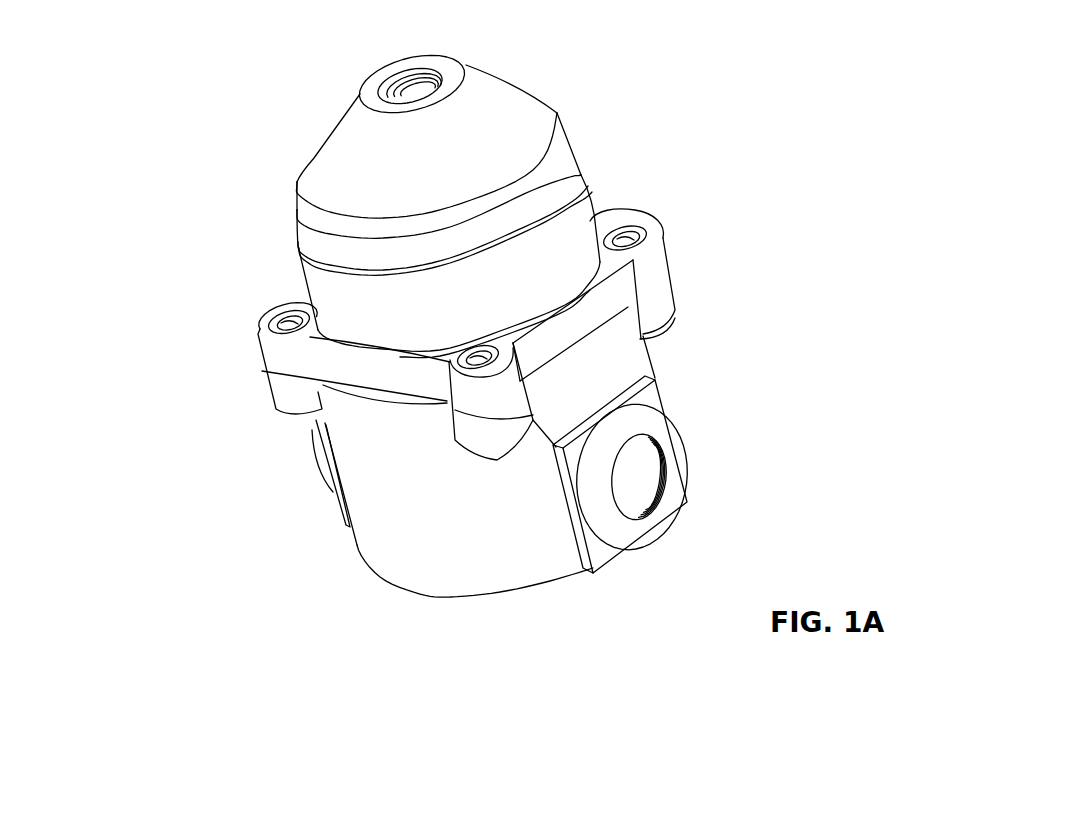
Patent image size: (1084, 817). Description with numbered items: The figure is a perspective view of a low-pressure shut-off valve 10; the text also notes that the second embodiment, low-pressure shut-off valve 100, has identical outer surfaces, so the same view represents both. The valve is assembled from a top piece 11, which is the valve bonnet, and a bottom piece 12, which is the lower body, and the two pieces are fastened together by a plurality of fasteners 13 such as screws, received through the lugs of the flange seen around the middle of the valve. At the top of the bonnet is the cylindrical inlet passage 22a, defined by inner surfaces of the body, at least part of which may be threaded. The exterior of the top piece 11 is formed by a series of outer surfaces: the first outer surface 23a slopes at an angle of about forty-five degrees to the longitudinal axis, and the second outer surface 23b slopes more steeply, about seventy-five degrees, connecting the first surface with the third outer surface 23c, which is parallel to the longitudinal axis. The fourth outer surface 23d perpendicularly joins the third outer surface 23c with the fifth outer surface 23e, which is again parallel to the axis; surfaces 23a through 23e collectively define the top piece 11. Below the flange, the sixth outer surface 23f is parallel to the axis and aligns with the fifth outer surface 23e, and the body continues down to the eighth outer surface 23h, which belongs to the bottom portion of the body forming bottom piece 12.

The low-pressure shut-off valve 10 is at (173, 50).
The low-pressure shut-off valve 100 is at (414, 360).
The top piece 11 is at (642, 82).
The bottom piece 12 is at (375, 634).
The fasteners 13 is at (306, 327).
The inlet passage 22a is at (376, 50).
The first outer surface 23a is at (490, 91).
The second outer surface 23b is at (557, 127).
The third outer surface 23c is at (317, 273).
The fourth outer surface 23d is at (604, 219).
The fifth outer surface 23e is at (657, 262).
The sixth outer surface 23f is at (340, 400).
The eighth outer surface 23h is at (483, 577).